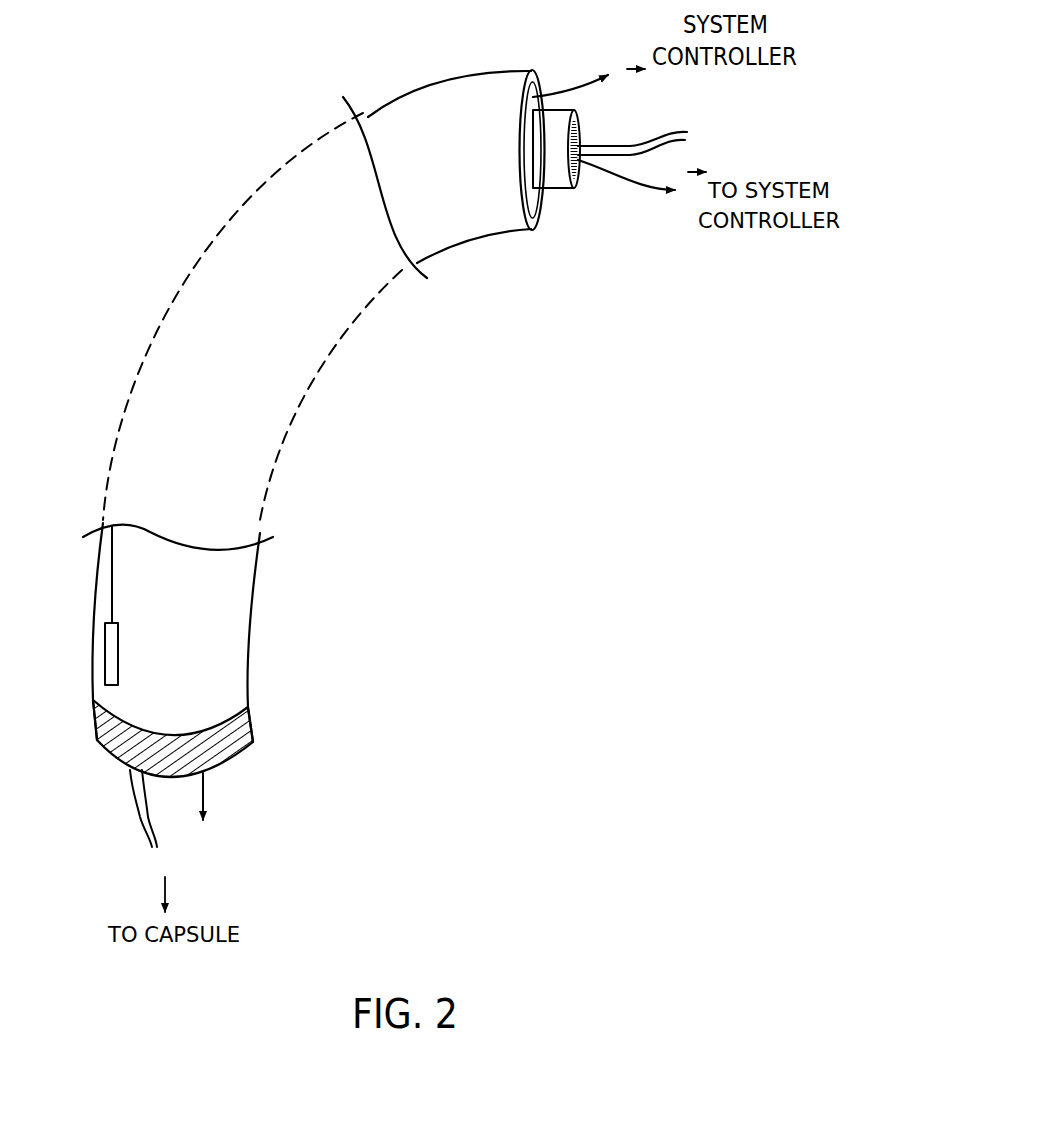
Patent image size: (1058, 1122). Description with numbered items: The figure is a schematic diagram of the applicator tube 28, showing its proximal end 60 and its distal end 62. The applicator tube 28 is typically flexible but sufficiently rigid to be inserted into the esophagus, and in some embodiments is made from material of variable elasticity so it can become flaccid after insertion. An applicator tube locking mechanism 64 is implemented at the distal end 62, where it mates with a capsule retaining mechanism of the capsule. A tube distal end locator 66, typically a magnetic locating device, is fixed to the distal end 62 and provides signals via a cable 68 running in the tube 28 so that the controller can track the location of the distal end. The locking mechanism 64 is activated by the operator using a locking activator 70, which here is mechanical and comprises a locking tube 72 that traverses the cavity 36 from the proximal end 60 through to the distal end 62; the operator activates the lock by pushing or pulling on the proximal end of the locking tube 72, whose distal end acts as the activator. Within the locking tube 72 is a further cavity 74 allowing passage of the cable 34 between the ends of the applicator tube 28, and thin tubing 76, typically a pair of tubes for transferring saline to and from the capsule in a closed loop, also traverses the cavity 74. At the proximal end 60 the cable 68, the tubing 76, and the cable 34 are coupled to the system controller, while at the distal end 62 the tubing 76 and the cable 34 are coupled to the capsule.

The applicator tube 28 is at (388, 108).
The cable 34 is at (654, 192).
The cavity 36 is at (553, 190).
The proximal end 60 is at (487, 245).
The distal end 62 is at (250, 688).
The applicator tube locking mechanism 64 is at (253, 722).
The tube distal end locator 66 is at (105, 655).
The cable 68 is at (601, 69).
The locking activator 70 is at (123, 769).
The locking tube 72 is at (573, 190).
The further cavity 74 is at (580, 124).
The thin tubing 76 is at (679, 127).